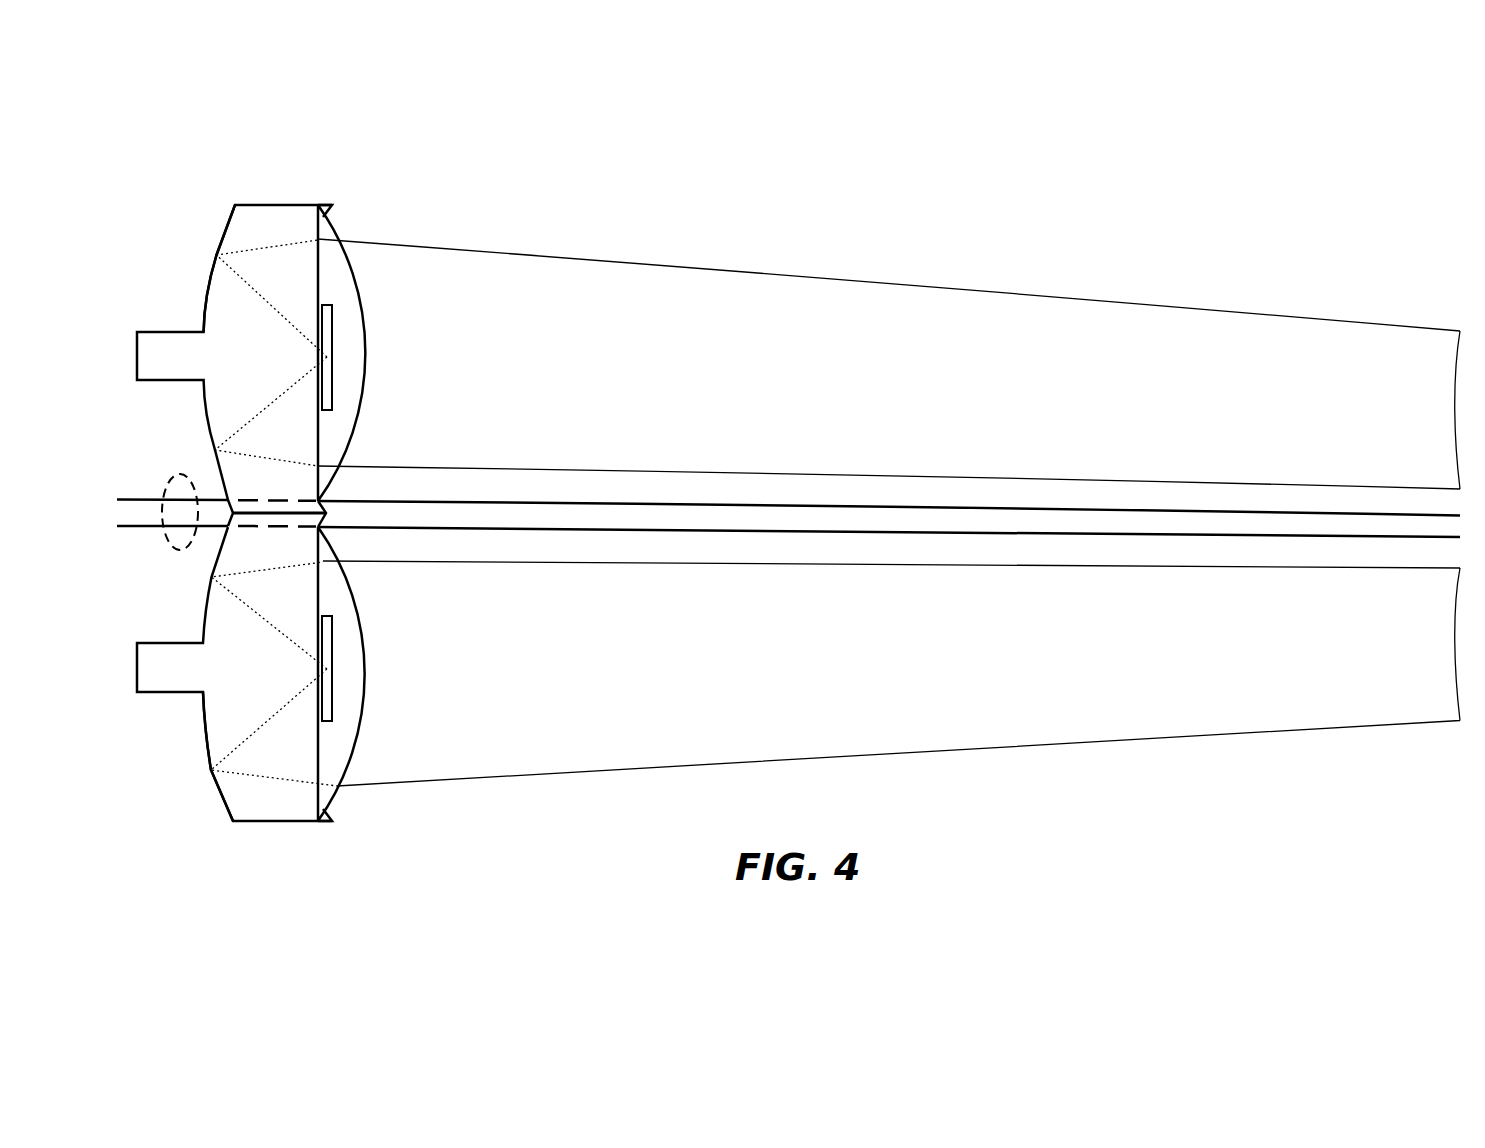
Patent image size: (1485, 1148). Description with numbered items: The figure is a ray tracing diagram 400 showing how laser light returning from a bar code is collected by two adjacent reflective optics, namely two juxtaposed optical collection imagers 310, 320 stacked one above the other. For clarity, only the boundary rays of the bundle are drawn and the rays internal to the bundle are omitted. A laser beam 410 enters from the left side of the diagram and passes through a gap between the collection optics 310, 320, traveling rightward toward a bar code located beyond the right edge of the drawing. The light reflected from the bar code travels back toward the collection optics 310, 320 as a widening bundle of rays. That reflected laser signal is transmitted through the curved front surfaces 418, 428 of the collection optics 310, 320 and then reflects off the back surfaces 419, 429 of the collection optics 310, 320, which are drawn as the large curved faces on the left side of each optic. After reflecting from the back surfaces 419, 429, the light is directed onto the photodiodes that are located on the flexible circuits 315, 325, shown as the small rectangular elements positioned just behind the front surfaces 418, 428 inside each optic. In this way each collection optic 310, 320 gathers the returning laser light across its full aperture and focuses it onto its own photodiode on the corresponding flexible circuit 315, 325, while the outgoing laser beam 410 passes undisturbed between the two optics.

The ray tracing diagram 400 is at (256, 86).
The optical collection imager 310 is at (245, 823).
The flexible circuit 315 is at (328, 698).
The optical collection imager 320 is at (255, 203).
The flexible circuit 325 is at (330, 327).
The laser beam 410 is at (172, 545).
The front surface 418 is at (330, 805).
The back surface 419 is at (211, 772).
The front surface 428 is at (324, 216).
The back surface 429 is at (217, 242).